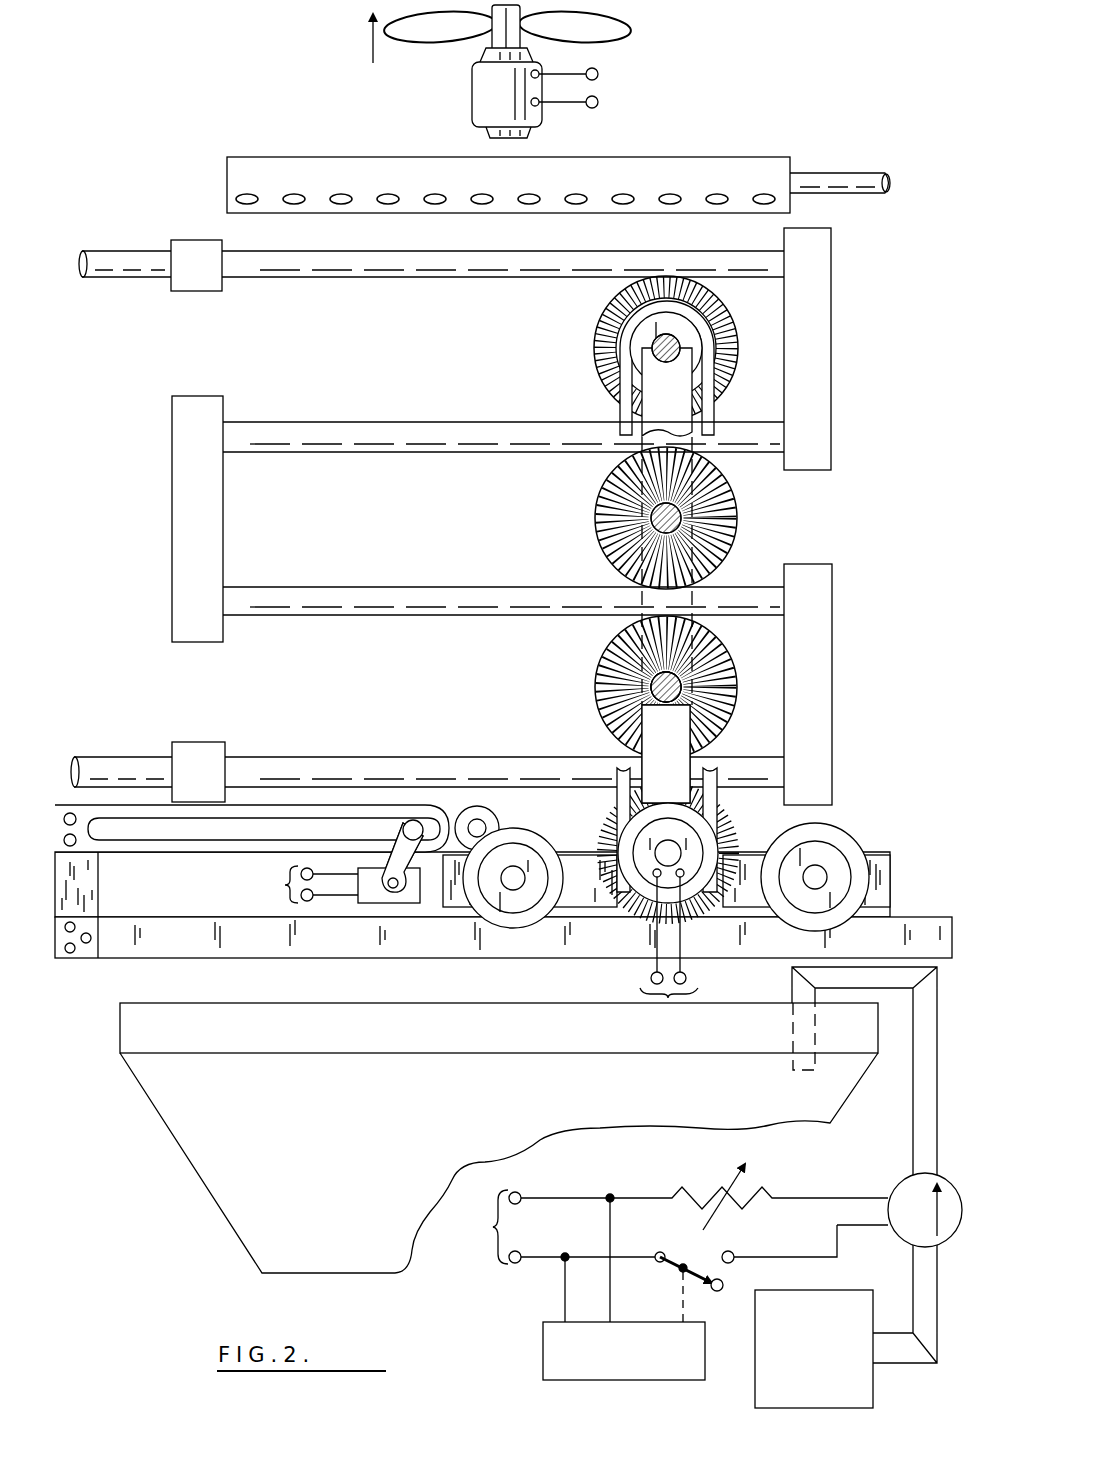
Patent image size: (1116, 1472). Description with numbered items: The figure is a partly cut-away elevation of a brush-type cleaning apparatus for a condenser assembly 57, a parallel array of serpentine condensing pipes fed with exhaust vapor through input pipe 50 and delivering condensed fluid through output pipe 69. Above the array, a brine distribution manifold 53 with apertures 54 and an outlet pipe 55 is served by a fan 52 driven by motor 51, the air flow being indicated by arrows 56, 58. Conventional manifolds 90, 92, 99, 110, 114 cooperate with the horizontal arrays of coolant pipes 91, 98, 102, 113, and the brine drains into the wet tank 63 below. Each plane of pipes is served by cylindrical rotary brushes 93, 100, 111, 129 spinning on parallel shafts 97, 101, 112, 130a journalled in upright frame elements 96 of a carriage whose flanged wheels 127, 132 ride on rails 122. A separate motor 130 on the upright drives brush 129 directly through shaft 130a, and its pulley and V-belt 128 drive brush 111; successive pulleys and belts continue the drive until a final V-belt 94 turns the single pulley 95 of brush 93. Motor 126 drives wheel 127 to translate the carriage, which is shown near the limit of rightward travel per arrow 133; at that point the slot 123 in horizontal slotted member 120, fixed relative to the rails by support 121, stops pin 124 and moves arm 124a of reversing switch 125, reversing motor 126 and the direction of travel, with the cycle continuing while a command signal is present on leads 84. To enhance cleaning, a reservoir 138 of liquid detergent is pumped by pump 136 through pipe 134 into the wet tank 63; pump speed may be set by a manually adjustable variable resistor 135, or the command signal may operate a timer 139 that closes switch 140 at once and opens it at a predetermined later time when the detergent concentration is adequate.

The input pipe 50 is at (128, 250).
The motor 51 is at (470, 97).
The fan 52 is at (612, 30).
The brine distribution manifold 53 is at (352, 150).
The manifold apertures 54 is at (758, 204).
The outlet pipe 55 is at (846, 170).
The air flow arrow 56 is at (207, 320).
The condenser assembly 57 is at (890, 527).
The flow direction arrow 58 is at (226, 668).
The wet tank 63 is at (120, 1036).
The output pipe 69 is at (126, 758).
The leads 84 is at (475, 1065).
The manifold 90 is at (198, 242).
The coolant pipes 91 is at (462, 280).
The manifold 92 is at (832, 305).
The rotary brush 93 is at (652, 539).
The V-belt 94 is at (622, 412).
The pulley 95 is at (712, 295).
The upright frame elements 96 is at (688, 415).
The shaft 97 is at (700, 330).
The coolant pipes 98 is at (405, 422).
The manifold 99 is at (222, 512).
The rotary brush 100 is at (673, 518).
The shaft 101 is at (604, 510).
The coolant pipes 102 is at (463, 588).
The manifold 110 is at (832, 664).
The rotary brush 111 is at (632, 687).
The shaft 112 is at (652, 690).
The coolant pipes 113 is at (394, 758).
The manifold 114 is at (198, 744).
The horizontal slotted member 120 is at (252, 850).
The support 121 is at (96, 878).
The rails 122 is at (254, 943).
The slot 123 is at (232, 835).
The pin 124 is at (450, 818).
The arm 124a is at (402, 910).
The reversing switch 125 is at (372, 904).
The motor 126 is at (498, 824).
The flanged wheels 127 is at (504, 905).
The V-belt 128 is at (718, 790).
The rotary brush 129 is at (732, 836).
The motor 130 is at (677, 887).
The shaft 130a is at (655, 866).
The flanged wheels 132 is at (846, 832).
The arrow 133 is at (972, 878).
The pipe 134 is at (913, 1108).
The variable resistor 135 is at (722, 1184).
The pump 136 is at (896, 1190).
The reservoir 138 is at (835, 1290).
The timer 139 is at (616, 1382).
The switch 140 is at (690, 1256).